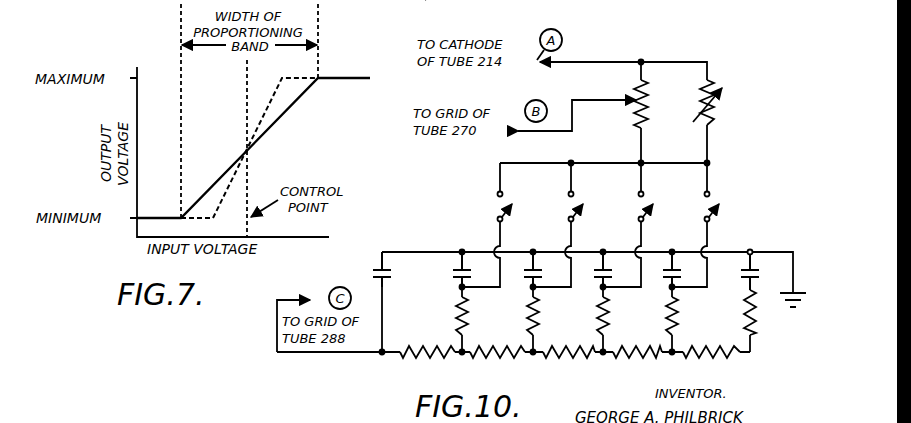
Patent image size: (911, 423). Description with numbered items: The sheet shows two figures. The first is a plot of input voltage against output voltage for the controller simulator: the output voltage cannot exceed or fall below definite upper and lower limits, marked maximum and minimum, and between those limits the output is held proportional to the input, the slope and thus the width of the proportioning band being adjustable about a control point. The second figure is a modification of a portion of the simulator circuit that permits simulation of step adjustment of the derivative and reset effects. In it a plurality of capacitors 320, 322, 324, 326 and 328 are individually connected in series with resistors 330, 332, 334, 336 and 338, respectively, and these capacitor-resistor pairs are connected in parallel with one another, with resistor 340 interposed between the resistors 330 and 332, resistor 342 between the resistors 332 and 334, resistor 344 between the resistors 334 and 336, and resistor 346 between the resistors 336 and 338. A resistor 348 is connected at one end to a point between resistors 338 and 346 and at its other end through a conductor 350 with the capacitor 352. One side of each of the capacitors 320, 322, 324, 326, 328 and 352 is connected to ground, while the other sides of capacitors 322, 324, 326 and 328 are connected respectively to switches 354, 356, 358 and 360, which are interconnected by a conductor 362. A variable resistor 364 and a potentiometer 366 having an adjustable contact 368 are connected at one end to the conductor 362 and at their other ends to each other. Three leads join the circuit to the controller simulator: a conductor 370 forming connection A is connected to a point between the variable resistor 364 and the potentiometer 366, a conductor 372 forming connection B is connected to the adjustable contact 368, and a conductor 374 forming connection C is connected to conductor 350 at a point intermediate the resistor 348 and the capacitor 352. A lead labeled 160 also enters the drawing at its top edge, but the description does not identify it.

The conductor 160 is at (425, 0).
The conductor 370 is at (609, 61).
The adjustable contact 368 is at (630, 97).
The conductor 372 is at (604, 101).
The potentiometer 366 is at (646, 102).
The variable resistor 364 is at (712, 108).
The conductor 362 is at (670, 163).
The switch 360 is at (500, 211).
The switch 358 is at (571, 211).
The switch 356 is at (641, 211).
The switch 354 is at (722, 210).
The capacitor 352 is at (378, 267).
The capacitor 328 is at (454, 270).
The capacitor 326 is at (541, 271).
The capacitor 324 is at (607, 271).
The capacitor 322 is at (677, 271).
The capacitor 320 is at (757, 268).
The conductor 350 is at (385, 295).
The resistor 338 is at (468, 316).
The resistor 336 is at (539, 316).
The resistor 334 is at (609, 316).
The resistor 332 is at (678, 316).
The resistor 330 is at (756, 322).
The resistor 348 is at (421, 349).
The resistor 346 is at (496, 349).
The resistor 344 is at (568, 349).
The resistor 342 is at (629, 349).
The resistor 340 is at (703, 349).
The conductor 374 is at (346, 354).